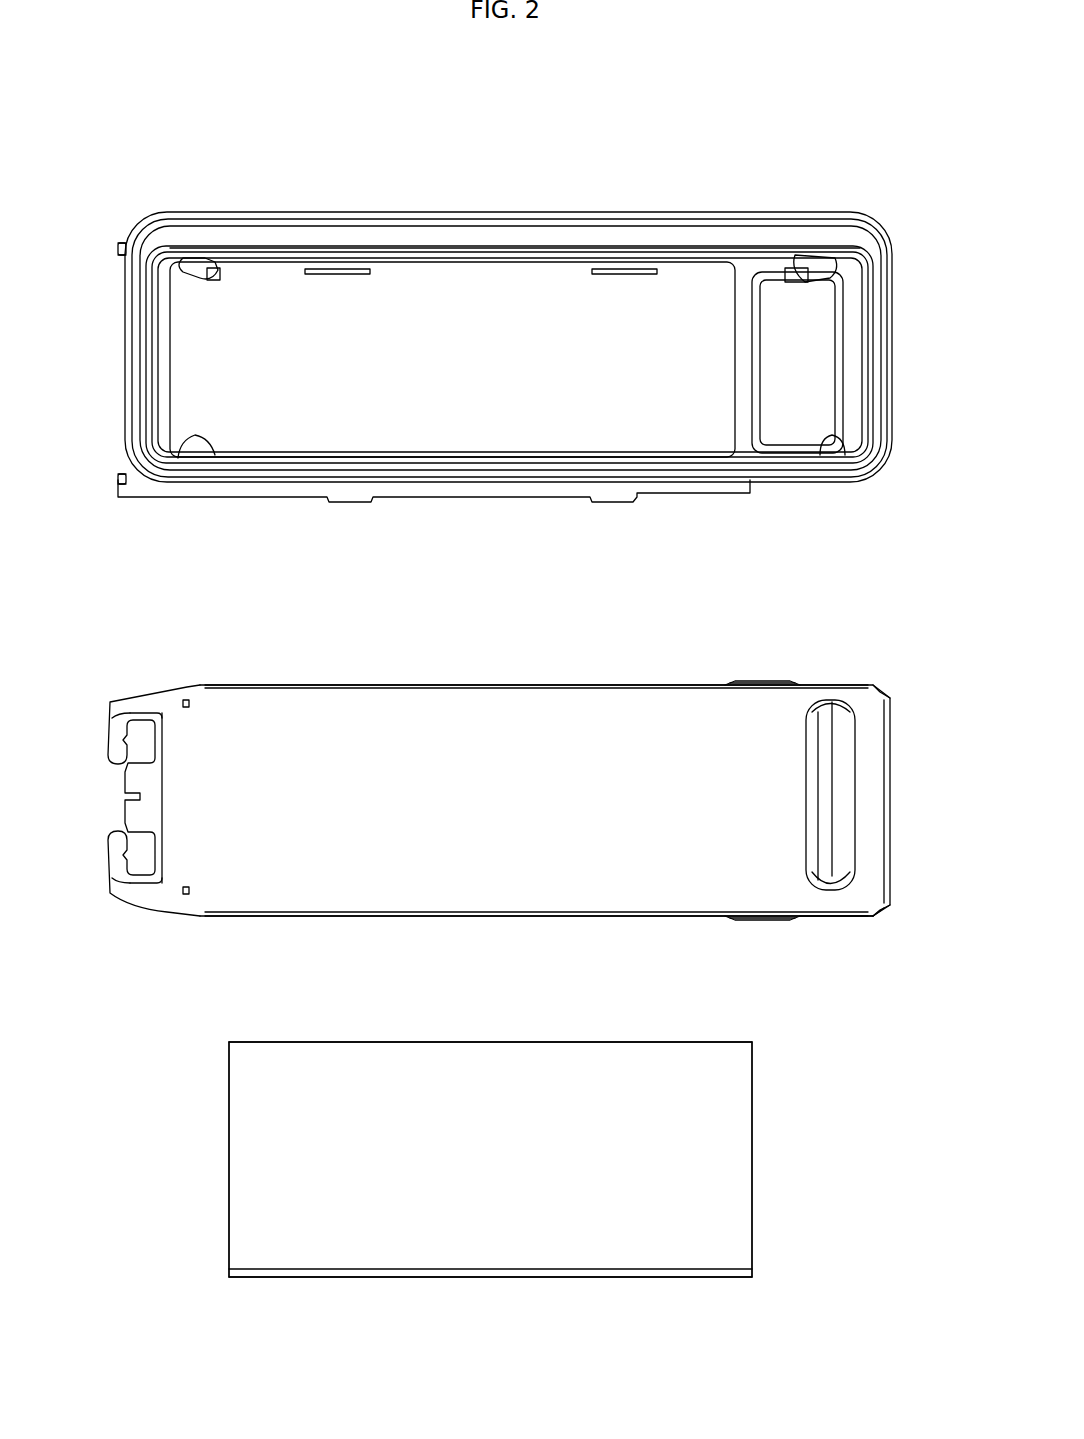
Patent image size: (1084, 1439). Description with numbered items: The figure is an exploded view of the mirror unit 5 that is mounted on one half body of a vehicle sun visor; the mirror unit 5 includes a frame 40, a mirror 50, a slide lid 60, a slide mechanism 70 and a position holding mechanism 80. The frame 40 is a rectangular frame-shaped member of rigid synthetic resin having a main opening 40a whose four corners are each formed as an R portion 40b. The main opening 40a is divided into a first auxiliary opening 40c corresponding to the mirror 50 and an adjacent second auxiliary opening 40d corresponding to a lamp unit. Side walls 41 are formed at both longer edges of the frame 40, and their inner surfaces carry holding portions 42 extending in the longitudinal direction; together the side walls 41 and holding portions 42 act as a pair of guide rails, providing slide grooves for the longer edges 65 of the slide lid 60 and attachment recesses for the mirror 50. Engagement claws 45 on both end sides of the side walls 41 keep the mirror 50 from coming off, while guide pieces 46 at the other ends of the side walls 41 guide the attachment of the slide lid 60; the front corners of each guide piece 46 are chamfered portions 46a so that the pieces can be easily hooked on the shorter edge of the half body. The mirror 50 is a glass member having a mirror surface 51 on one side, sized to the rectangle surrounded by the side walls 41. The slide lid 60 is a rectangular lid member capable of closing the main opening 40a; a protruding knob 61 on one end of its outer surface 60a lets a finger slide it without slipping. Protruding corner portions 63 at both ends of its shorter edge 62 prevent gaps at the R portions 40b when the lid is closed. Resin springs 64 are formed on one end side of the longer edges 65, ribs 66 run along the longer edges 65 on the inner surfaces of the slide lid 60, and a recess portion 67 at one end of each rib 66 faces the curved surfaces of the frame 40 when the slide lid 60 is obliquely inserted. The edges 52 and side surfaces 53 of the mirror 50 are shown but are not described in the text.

The mirror unit 5 is at (469, 341).
The frame 40 is at (469, 372).
The main opening 40a is at (506, 437).
The R portion 40b is at (210, 265).
The first auxiliary opening 40c is at (661, 396).
The second auxiliary opening 40d is at (791, 401).
The side wall 41 is at (482, 500).
The holding portion 42 is at (492, 253).
The engagement claw 45 is at (343, 278).
The guide piece 46 is at (118, 248).
The chamfered portion 46a is at (124, 243).
The mirror 50 is at (494, 1161).
The mirror surface 51 is at (382, 1078).
The edge 52 is at (325, 1040).
The side surface 53 is at (229, 1152).
The slide lid 60 is at (503, 801).
The outer surface 60a is at (640, 720).
The knob 61 is at (835, 815).
The shorter edge 62 is at (125, 770).
The corner portion 63 is at (882, 697).
The resin spring 64 is at (765, 683).
The longer edge 65 is at (400, 683).
The rib 66 is at (833, 917).
The recess portion 67 is at (870, 917).
The slide mechanism 70 is at (489, 416).
The position holding mechanism 80 is at (776, 802).